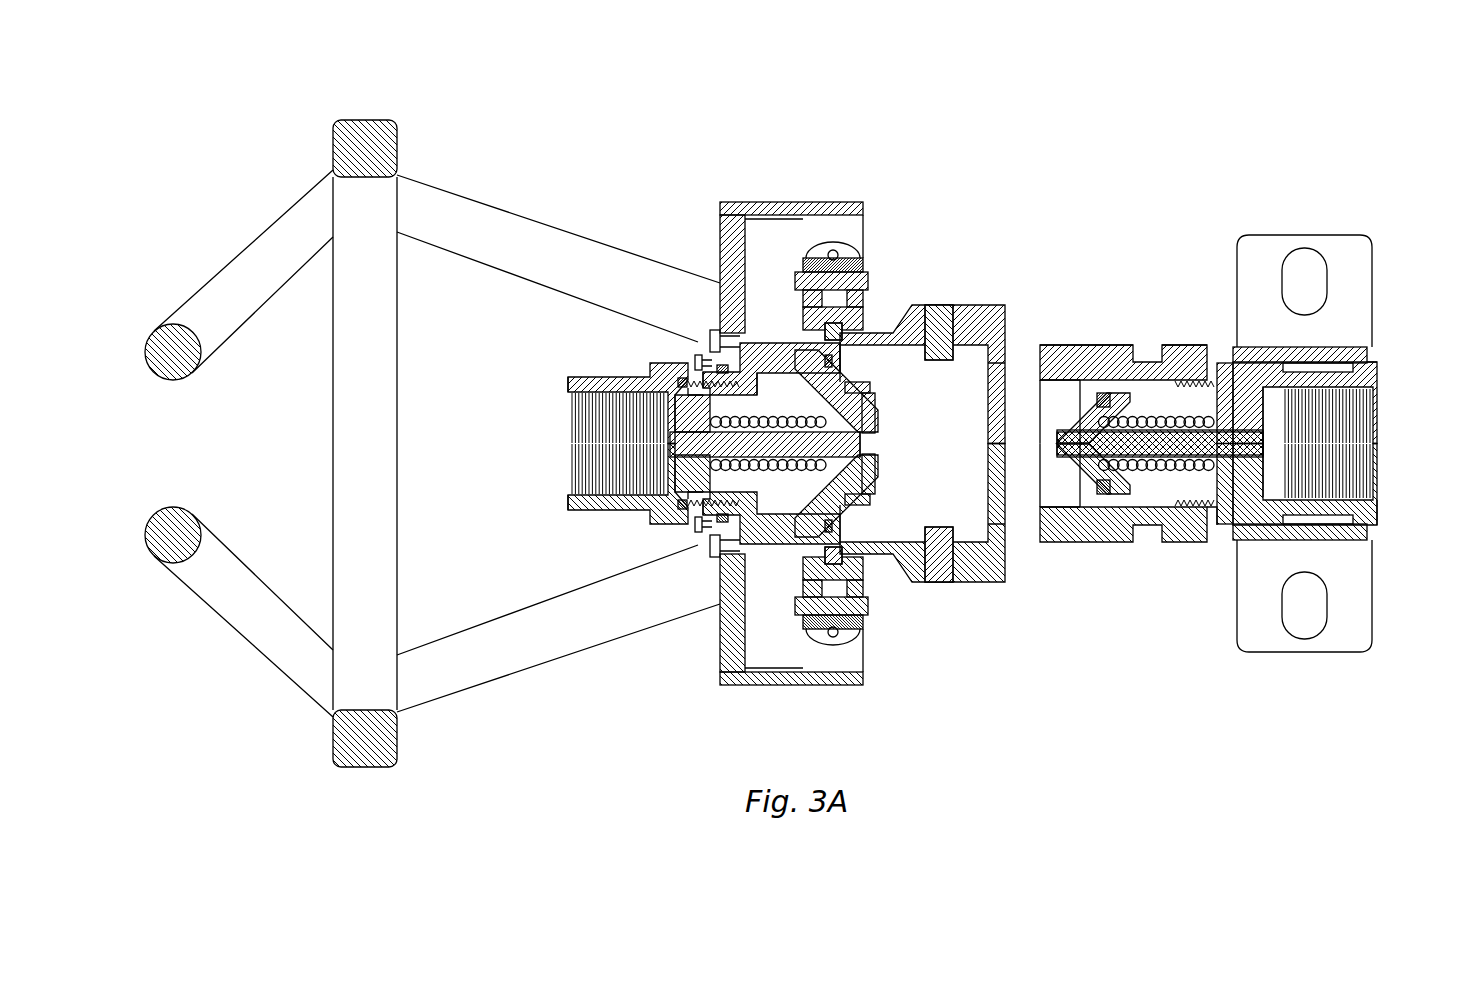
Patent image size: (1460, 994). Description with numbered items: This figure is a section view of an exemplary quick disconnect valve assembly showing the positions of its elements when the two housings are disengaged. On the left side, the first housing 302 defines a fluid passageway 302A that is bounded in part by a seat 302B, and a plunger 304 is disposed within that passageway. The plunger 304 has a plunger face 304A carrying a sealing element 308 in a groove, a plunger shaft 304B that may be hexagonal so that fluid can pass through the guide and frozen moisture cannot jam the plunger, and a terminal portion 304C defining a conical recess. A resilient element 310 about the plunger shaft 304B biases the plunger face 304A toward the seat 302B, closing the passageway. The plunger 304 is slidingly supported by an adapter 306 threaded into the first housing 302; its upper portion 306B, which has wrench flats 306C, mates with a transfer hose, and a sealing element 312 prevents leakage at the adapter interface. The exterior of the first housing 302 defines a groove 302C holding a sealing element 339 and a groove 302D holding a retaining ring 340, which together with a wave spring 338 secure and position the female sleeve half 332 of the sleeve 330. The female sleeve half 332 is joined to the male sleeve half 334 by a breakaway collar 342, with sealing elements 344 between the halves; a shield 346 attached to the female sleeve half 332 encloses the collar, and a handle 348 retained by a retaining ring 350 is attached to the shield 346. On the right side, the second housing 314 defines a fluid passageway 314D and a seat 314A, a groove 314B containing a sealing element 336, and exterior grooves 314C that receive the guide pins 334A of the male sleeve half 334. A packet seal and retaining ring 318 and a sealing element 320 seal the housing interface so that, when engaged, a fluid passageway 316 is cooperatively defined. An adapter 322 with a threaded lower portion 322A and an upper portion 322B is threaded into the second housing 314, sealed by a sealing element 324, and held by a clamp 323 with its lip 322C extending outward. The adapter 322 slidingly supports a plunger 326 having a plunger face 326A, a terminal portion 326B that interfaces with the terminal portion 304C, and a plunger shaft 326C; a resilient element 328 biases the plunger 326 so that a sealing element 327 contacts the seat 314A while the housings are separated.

The first housing 302 is at (752, 560).
The fluid passageway 302A is at (762, 600).
The seat 302B is at (798, 345).
The groove 302C is at (607, 618).
The groove 302D is at (609, 536).
The plunger 304 is at (692, 558).
The plunger face 304A is at (868, 460).
The plunger shaft 304B is at (678, 440).
The terminal portion 304C is at (878, 470).
The adapter 306 is at (553, 442).
The upper portion 306B is at (580, 380).
The wrench flats 306C is at (595, 512).
The sealing element 308 is at (822, 480).
The resilient element 310 is at (690, 520).
The sealing element 312 is at (690, 382).
The second housing 314 is at (1137, 353).
The seat 314A is at (1118, 348).
The groove 314B is at (1260, 348).
The grooves 314C is at (1182, 347).
The fluid passageway 314D is at (1165, 510).
The fluid passageway 316 is at (862, 420).
The packet seal and retaining ring 318 is at (870, 388).
The sealing element 320 is at (833, 362).
The adapter 322 is at (1385, 343).
The lower portion 322A is at (1250, 520).
The upper portion 322B is at (1378, 515).
The lip 322C is at (1383, 363).
The clamp 323 is at (1368, 248).
The sealing element 324 is at (1223, 365).
The plunger 326 is at (1140, 545).
The plunger face 326A is at (1050, 545).
The terminal portion 326B is at (1045, 560).
The plunger shaft 326C is at (1262, 560).
The sealing element 327 is at (1085, 348).
The resilient element 328 is at (1200, 480).
The sleeve 330 is at (954, 395).
The female sleeve half 332 is at (714, 335).
The male sleeve half 334 is at (995, 325).
The guide pins 334A is at (945, 308).
The sealing element 336 is at (1225, 362).
The wave spring 338 is at (697, 358).
The sealing element 339 is at (697, 555).
The retaining ring 340 is at (702, 540).
The breakaway collar 342 is at (857, 252).
The sealing elements 344 is at (862, 300).
The shield 346 is at (748, 202).
The handle 348 is at (393, 148).
The retaining ring 350 is at (702, 560).